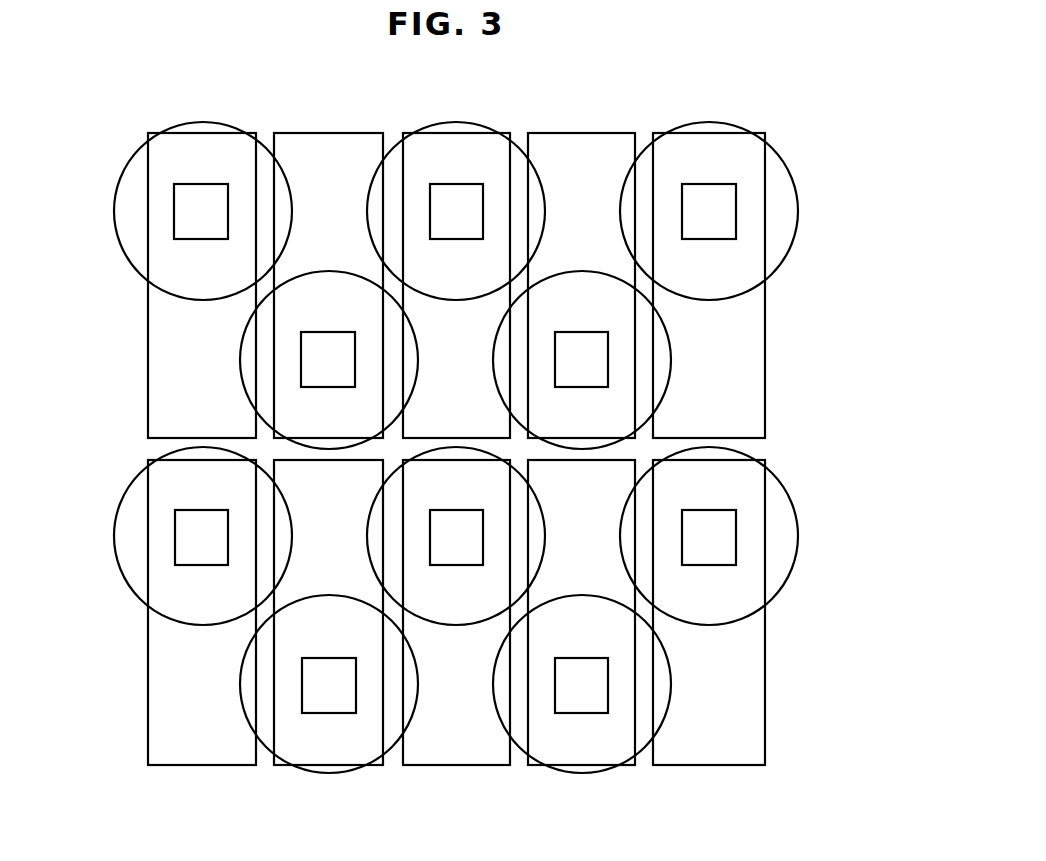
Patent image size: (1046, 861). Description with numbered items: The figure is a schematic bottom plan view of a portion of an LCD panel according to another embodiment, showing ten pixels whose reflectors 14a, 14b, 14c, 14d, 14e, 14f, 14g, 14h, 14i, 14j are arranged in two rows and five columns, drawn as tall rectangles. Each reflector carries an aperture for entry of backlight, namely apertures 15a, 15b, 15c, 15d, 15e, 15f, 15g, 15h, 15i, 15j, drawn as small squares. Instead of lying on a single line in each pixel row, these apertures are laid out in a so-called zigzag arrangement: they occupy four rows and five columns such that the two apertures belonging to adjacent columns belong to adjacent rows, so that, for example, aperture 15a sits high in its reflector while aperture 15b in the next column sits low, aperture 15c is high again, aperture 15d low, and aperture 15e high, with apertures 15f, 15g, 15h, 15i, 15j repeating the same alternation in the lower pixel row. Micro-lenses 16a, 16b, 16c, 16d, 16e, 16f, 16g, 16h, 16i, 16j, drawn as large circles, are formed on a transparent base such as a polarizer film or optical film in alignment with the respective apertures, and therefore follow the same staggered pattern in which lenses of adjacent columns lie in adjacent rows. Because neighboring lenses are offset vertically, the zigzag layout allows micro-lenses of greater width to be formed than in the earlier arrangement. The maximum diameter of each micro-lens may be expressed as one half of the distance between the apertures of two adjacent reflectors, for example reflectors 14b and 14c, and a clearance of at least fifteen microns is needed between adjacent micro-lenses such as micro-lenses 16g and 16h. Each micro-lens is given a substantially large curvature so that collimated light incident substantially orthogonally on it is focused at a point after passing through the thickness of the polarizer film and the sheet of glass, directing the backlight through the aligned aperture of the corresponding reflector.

The reflector 14a is at (163, 381).
The reflector 14b is at (330, 148).
The reflector 14c is at (475, 397).
The reflector 14d is at (573, 133).
The reflector 14e is at (748, 381).
The reflector 14f is at (163, 697).
The reflector 14g is at (350, 528).
The reflector 14h is at (460, 754).
The reflector 14i is at (598, 528).
The reflector 14j is at (720, 754).
The aperture 15a is at (220, 226).
The aperture 15b is at (347, 374).
The aperture 15c is at (476, 226).
The aperture 15d is at (601, 374).
The aperture 15e is at (728, 226).
The aperture 15f is at (218, 552).
The aperture 15g is at (348, 700).
The aperture 15h is at (476, 552).
The aperture 15i is at (598, 700).
The aperture 15j is at (726, 552).
The micro-lens 16a is at (197, 121).
The micro-lens 16b is at (328, 271).
The micro-lens 16c is at (457, 121).
The micro-lens 16d is at (582, 271).
The micro-lens 16e is at (708, 122).
The micro-lens 16f is at (120, 499).
The micro-lens 16g is at (328, 773).
The micro-lens 16h is at (453, 627).
The micro-lens 16i is at (580, 773).
The micro-lens 16j is at (782, 597).